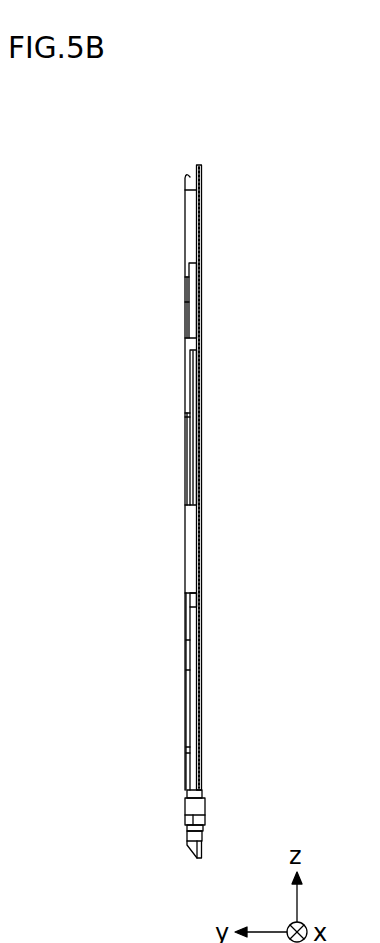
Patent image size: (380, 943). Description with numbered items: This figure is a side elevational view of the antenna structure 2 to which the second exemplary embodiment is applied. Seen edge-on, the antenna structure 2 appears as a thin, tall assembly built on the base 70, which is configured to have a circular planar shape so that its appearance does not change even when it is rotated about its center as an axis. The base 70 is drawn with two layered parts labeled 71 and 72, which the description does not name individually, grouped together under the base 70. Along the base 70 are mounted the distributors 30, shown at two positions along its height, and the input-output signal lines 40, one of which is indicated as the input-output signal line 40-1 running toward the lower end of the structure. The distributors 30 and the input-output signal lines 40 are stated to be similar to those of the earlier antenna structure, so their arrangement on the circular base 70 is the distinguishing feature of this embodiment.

The antenna structure 2 is at (273, 126).
The base 70 is at (241, 82).
The outer tube 71 is at (198, 165).
The inner tube 72 is at (190, 177).
The distributor 30 is at (190, 343).
The input-output signal line 40-1 is at (190, 715).
The input-output signal lines 40 is at (279, 691).